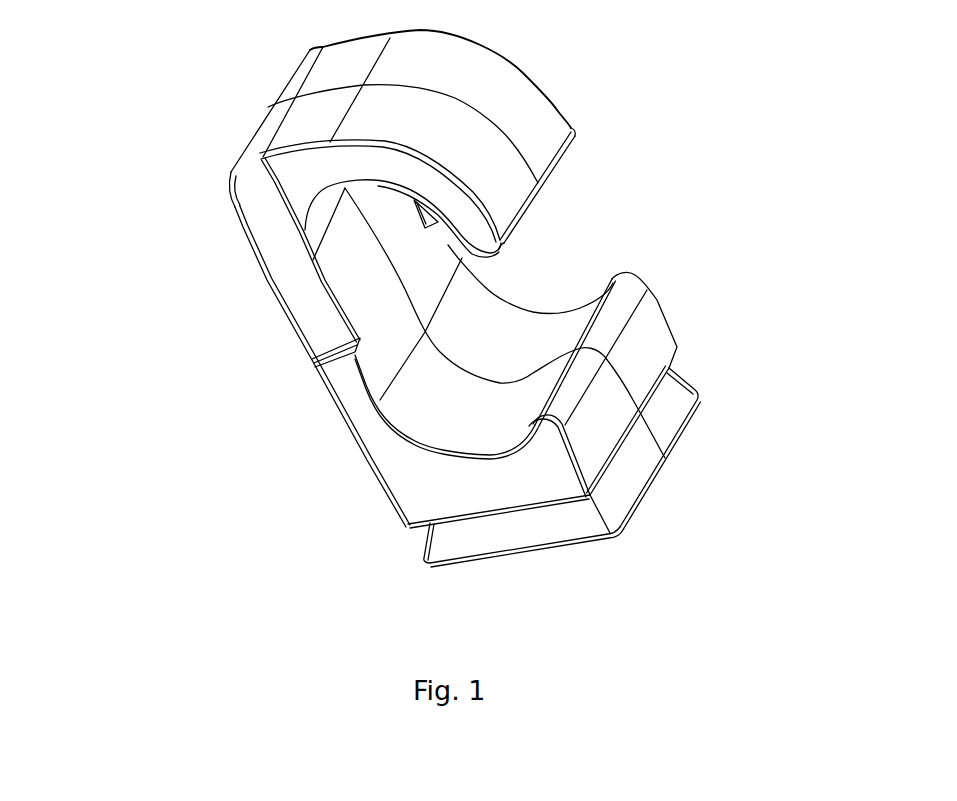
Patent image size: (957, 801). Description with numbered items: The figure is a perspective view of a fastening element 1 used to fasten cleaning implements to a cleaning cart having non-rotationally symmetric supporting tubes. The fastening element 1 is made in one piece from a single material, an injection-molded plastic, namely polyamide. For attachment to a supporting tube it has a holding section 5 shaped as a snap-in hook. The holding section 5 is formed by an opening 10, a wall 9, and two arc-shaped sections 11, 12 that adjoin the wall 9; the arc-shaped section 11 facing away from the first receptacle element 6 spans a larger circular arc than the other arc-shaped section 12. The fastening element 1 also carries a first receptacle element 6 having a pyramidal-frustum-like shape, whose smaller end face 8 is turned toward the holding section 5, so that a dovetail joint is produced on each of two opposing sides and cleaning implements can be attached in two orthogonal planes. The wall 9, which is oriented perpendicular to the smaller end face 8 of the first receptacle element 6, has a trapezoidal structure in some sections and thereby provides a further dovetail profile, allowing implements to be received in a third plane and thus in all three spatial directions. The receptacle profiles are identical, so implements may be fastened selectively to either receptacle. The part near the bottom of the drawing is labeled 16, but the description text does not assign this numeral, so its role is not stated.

The fastening element 1 is at (180, 132).
The holding section 5 is at (630, 217).
The first receptacle element 6 is at (687, 430).
The smaller end face 8 is at (662, 379).
The wall 9 is at (373, 295).
The opening 10 is at (603, 167).
The arc-shaped section 11 is at (541, 121).
The arc-shaped section 12 is at (623, 303).
The foot 16 is at (558, 555).